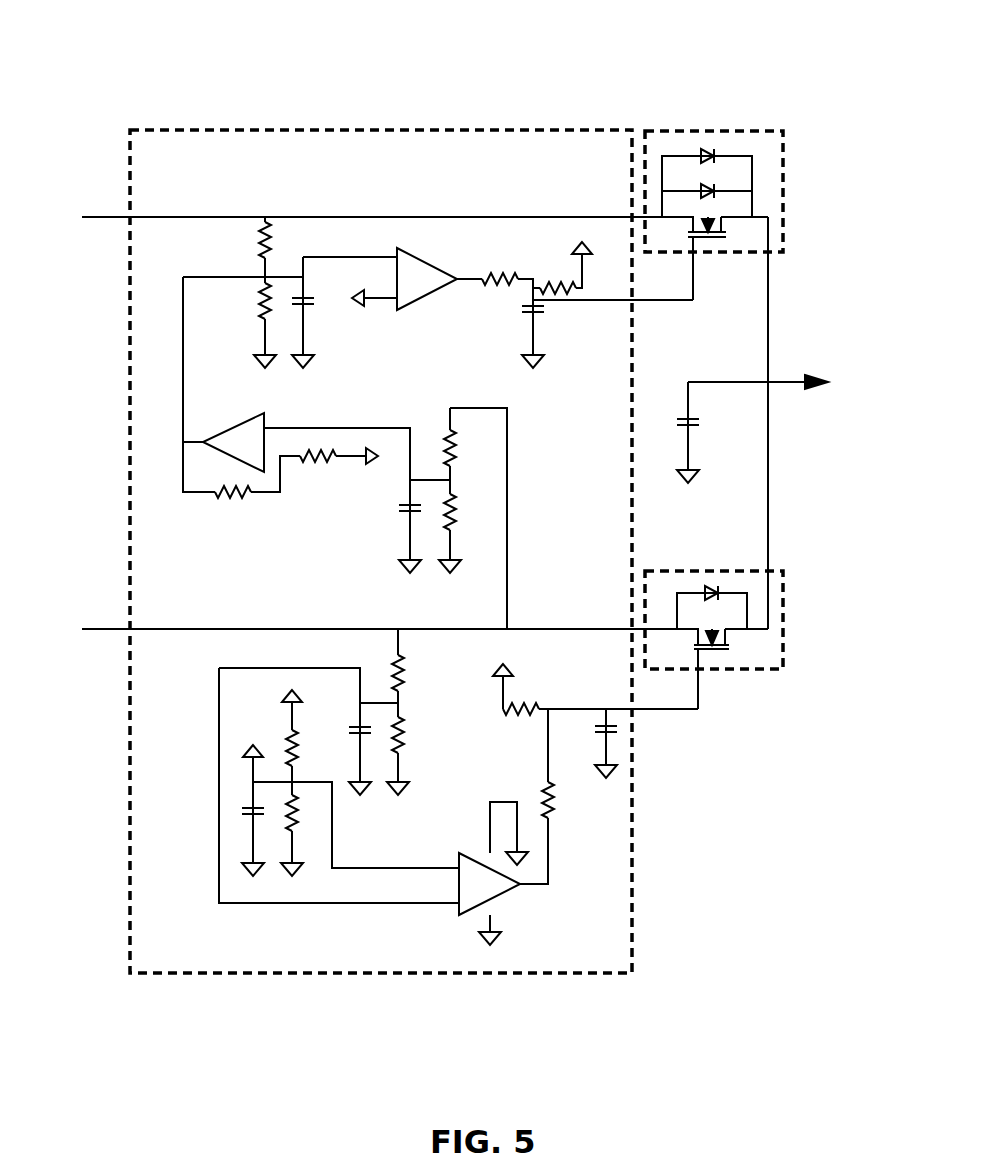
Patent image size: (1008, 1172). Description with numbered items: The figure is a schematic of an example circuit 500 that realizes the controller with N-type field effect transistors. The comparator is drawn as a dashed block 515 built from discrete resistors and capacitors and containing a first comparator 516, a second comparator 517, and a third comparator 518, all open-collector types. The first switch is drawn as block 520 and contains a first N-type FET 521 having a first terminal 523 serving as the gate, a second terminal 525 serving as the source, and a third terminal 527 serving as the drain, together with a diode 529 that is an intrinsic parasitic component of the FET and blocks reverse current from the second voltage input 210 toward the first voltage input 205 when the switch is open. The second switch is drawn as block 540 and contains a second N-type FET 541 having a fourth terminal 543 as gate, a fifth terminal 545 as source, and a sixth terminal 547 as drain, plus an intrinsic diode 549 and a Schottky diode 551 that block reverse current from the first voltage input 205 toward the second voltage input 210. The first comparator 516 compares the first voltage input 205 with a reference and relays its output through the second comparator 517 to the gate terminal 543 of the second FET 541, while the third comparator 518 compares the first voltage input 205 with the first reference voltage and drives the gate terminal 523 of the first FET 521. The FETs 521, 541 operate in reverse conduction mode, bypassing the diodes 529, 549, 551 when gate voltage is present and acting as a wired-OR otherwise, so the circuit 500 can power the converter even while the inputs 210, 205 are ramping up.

The circuit 500 is at (197, 82).
The comparator block 515 is at (366, 130).
The second switch 540 is at (722, 131).
The first switch 520 is at (658, 571).
The second voltage input 210 is at (83, 180).
The first voltage input 205 is at (83, 585).
The second comparator 517 is at (452, 247).
The first comparator 516 is at (264, 412).
The third comparator 518 is at (460, 853).
The Schottky diode 551 is at (712, 152).
The diode 549 is at (712, 188).
The sixth terminal 547 is at (722, 230).
The fifth terminal 545 is at (690, 226).
The fourth terminal 543 is at (700, 243).
The second N-type FET 541 is at (733, 242).
The diode 529 is at (718, 592).
The third terminal 527 is at (727, 640).
The second terminal 525 is at (695, 637).
The first terminal 523 is at (705, 652).
The first N-type FET 521 is at (733, 648).